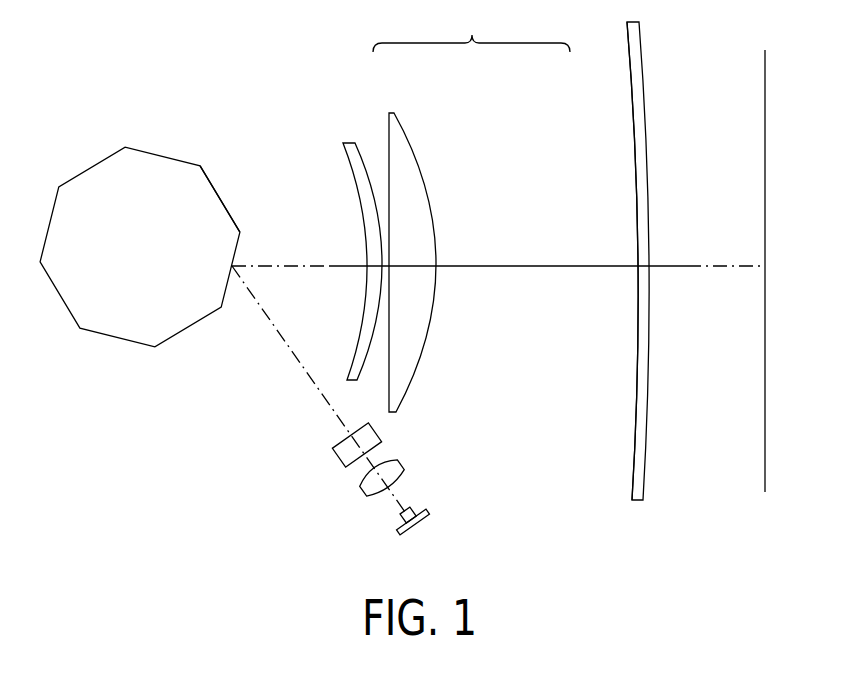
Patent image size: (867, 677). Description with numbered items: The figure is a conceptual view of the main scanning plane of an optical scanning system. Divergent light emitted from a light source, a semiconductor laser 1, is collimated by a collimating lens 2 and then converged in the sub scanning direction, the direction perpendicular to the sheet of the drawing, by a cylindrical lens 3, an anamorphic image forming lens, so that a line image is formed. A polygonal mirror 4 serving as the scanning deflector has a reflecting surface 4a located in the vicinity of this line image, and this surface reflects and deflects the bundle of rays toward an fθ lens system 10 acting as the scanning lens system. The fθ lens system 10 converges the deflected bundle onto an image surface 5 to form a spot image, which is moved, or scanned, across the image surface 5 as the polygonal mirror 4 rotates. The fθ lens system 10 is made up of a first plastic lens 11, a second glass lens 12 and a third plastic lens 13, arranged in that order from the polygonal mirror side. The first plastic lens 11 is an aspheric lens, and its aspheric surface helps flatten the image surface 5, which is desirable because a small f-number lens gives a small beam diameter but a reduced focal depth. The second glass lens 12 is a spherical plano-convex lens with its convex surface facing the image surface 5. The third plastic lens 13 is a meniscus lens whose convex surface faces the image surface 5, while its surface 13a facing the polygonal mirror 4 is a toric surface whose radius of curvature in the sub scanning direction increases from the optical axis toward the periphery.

The semiconductor laser 1 is at (398, 531).
The collimating lens 2 is at (362, 489).
The cylindrical lens 3 is at (333, 453).
The polygonal mirror 4 is at (147, 330).
The reflecting surface 4a is at (194, 167).
The image surface 5 is at (765, 112).
The fθ lens system 10 is at (471, 28).
The first plastic lens 11 is at (357, 150).
The second glass lens 12 is at (405, 128).
The third plastic lens 13 is at (633, 120).
The toric surface 13a is at (632, 430).